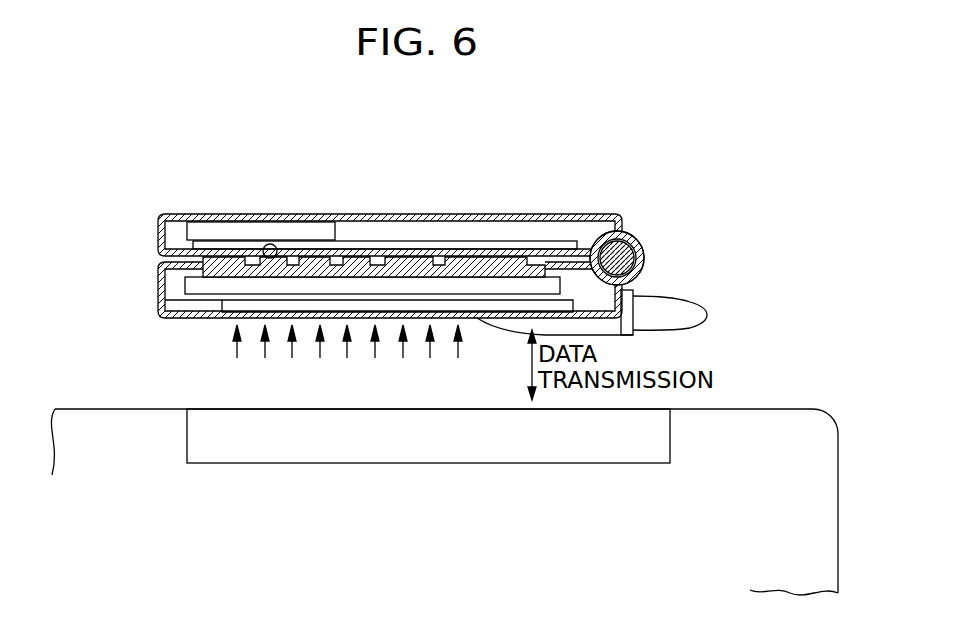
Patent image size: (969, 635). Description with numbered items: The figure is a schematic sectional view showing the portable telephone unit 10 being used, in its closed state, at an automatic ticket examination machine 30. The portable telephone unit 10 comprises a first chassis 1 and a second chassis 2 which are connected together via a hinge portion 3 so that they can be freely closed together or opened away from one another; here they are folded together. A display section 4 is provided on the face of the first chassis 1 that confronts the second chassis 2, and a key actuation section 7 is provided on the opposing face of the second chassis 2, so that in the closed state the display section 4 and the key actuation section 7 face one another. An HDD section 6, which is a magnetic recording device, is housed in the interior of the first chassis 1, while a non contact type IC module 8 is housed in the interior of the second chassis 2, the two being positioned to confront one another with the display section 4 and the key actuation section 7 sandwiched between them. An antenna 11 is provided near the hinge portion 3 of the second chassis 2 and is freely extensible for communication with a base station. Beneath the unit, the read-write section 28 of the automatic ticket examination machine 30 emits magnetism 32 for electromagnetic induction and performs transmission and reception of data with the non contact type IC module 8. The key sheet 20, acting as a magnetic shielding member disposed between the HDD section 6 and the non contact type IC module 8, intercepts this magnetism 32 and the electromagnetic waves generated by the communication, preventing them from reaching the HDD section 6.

The first chassis 1 is at (356, 199).
The second chassis 2 is at (338, 316).
The hinge portion 3 is at (644, 262).
The display section 4 is at (374, 221).
The HDD section 6 is at (203, 232).
The key actuation section 7 is at (485, 261).
The non contact type IC module 8 is at (247, 310).
The portable telephone unit 10 is at (439, 239).
The antenna 11 is at (707, 315).
The key sheet 20 is at (266, 257).
The read-write section 28 is at (645, 433).
The automatic ticket examination machine 30 is at (813, 447).
The magnetism 32 is at (237, 350).